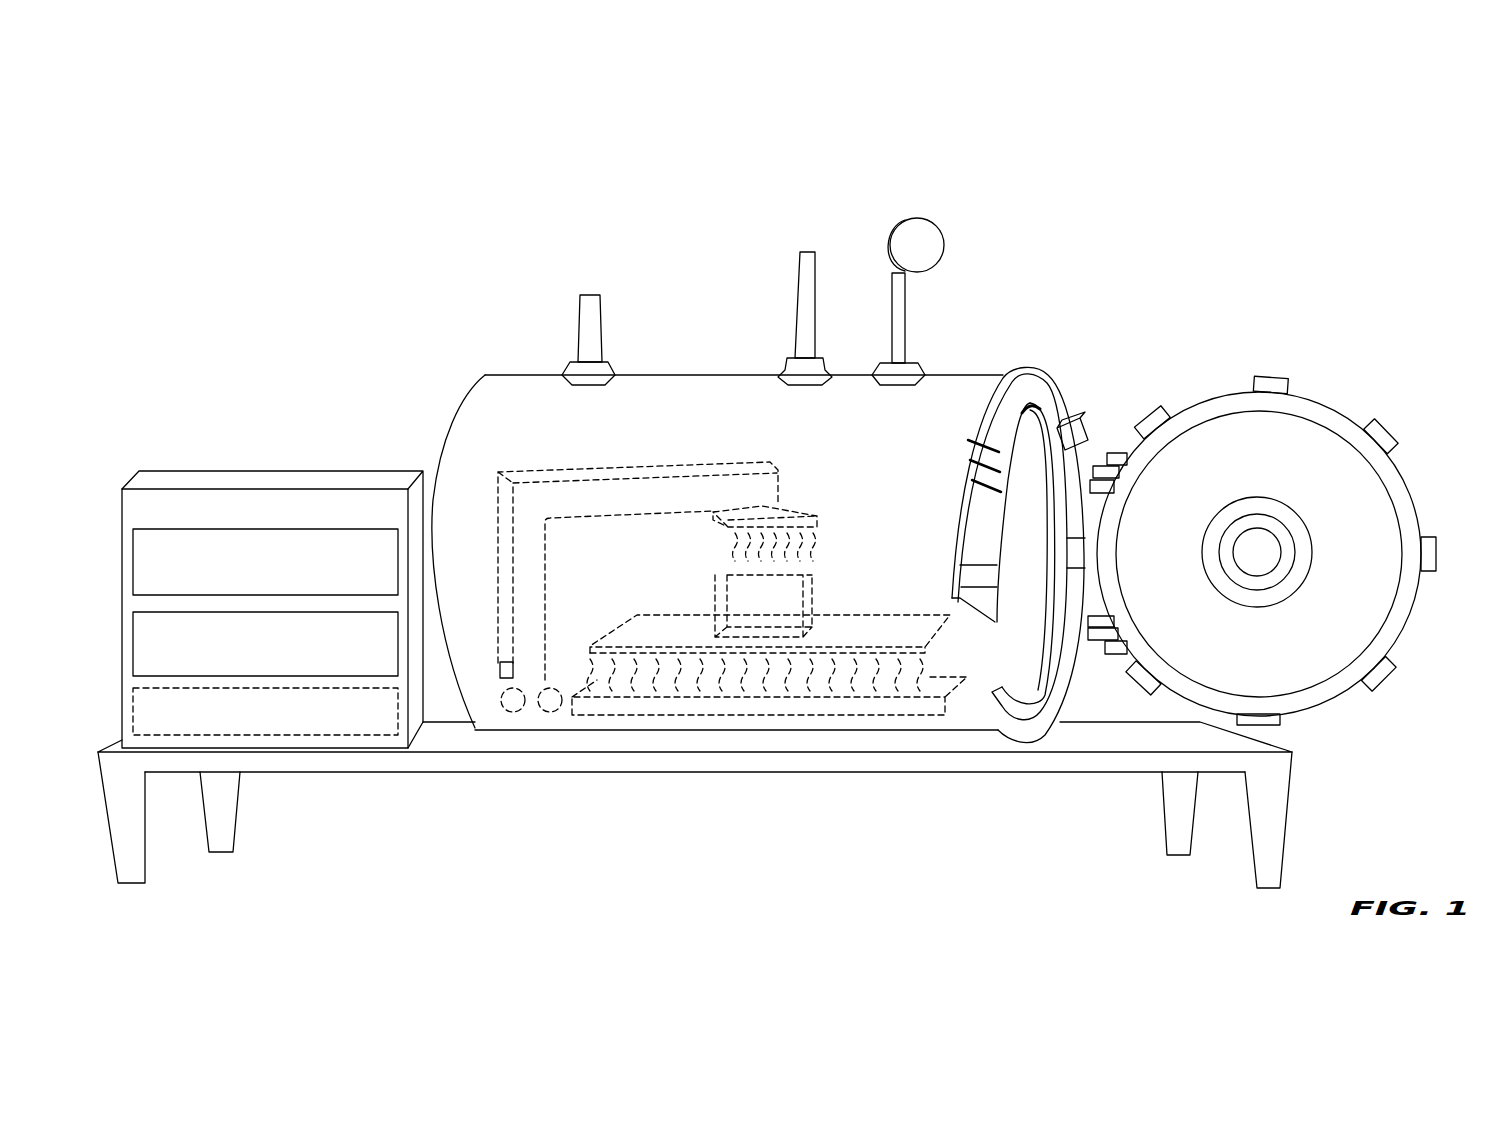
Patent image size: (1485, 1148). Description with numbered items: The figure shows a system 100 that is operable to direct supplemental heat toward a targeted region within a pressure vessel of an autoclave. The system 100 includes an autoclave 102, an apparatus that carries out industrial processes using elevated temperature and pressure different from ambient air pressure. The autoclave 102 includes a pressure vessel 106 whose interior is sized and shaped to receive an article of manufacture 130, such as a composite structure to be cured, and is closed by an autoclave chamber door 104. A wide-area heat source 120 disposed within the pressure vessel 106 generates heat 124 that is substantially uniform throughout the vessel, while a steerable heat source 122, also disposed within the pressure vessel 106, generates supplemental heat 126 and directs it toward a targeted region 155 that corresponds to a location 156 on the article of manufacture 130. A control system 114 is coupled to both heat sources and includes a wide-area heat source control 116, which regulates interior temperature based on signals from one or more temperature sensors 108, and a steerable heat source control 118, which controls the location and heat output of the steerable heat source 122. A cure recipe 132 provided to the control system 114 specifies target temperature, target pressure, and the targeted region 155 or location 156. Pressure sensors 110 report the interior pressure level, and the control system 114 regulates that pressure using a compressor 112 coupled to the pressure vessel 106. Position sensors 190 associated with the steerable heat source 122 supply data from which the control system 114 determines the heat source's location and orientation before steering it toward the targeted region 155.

The system 100 is at (198, 142).
The autoclave 102 is at (690, 358).
The autoclave chamber door 104 is at (1297, 393).
The pressure vessel 106 is at (1026, 458).
The temperature sensor 108 is at (797, 290).
The pressure sensor 110 is at (940, 232).
The compressor 112 is at (580, 326).
The control system 114 is at (437, 455).
The wide-area heat source control 116 is at (265, 562).
The steerable heat source control 118 is at (265, 644).
The wide-area heat source 120 is at (730, 716).
The steerable heat source 122 is at (538, 468).
The heat 124 is at (938, 682).
The supplemental heat 126 is at (722, 550).
The article of manufacture 130 is at (908, 627).
The cure recipe 132 is at (265, 711).
The targeted region 155 is at (812, 588).
The location 156 is at (765, 626).
The position sensor 190 is at (497, 668).